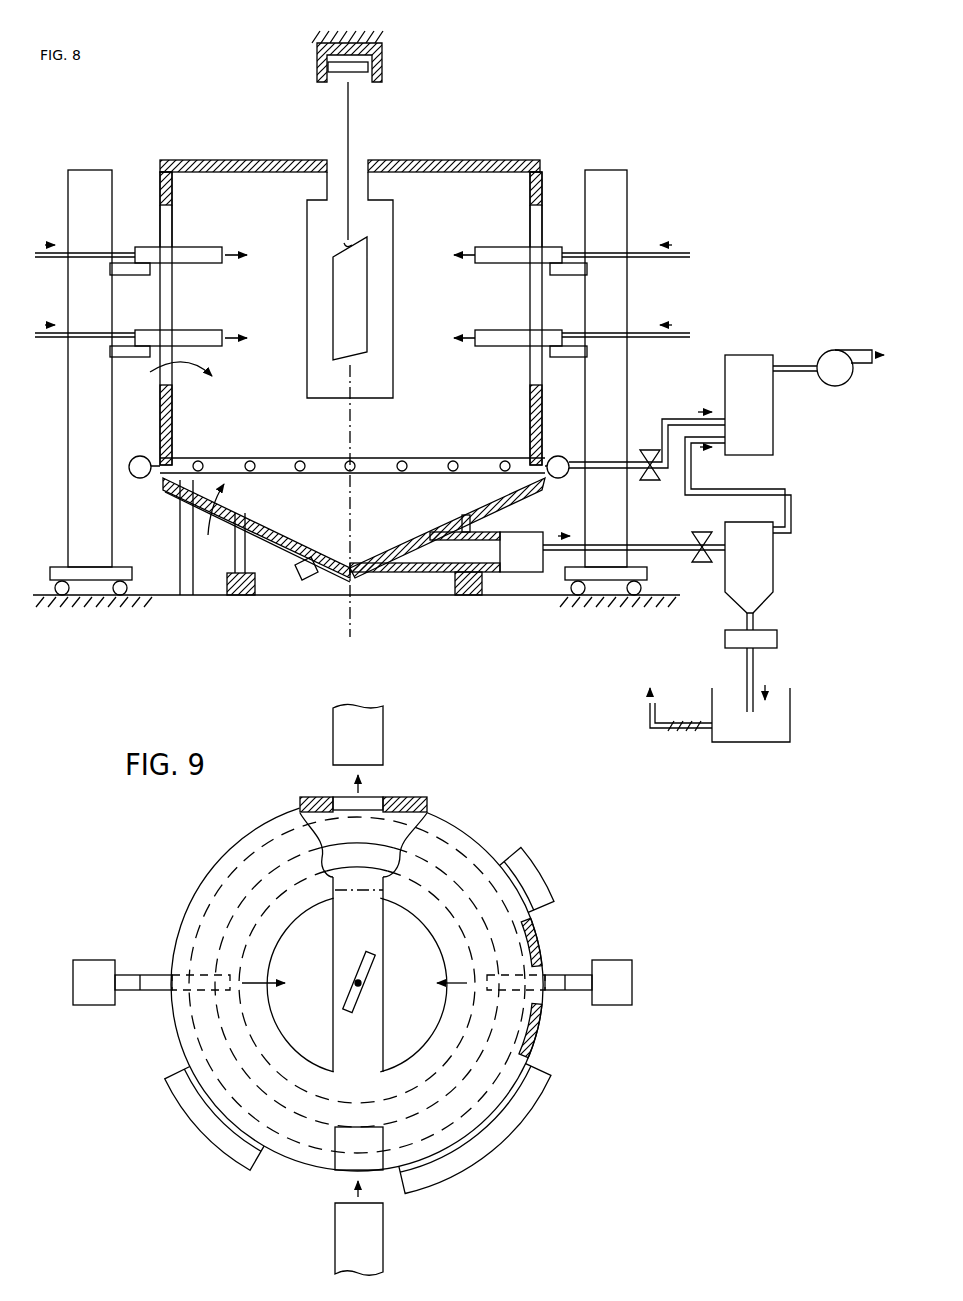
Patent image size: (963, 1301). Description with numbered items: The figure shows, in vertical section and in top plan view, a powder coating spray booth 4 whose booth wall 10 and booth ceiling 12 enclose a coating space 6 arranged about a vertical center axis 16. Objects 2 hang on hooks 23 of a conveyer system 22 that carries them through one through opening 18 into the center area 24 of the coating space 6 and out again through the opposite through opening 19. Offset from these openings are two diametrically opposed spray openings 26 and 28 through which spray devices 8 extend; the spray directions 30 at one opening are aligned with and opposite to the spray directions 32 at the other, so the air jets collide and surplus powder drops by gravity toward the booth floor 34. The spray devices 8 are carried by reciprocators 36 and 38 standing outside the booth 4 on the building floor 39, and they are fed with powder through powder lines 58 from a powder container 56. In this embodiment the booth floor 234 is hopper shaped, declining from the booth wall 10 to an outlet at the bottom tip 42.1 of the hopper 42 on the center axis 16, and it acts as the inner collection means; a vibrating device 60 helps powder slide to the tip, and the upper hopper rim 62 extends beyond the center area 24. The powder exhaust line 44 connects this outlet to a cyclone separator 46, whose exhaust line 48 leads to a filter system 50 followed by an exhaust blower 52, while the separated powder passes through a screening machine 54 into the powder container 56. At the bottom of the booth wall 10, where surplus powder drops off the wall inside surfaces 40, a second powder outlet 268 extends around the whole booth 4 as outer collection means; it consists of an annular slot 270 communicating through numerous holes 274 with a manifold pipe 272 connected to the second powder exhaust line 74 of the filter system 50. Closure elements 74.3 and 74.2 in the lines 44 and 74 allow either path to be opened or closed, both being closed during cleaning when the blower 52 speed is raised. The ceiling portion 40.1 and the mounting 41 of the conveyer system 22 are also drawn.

In FIG. 8, the objects 2 is at (357, 262).
In FIG. 9, the objects 2 is at (368, 965).
In FIG. 8, the spray booth 4 is at (466, 150).
In FIG. 9, the spray booth 4 is at (495, 843).
In FIG. 8, the coating space 6 is at (481, 195).
In FIG. 9, the coating space 6 is at (280, 850).
In FIG. 8, the spray devices 8 is at (195, 248).
In FIG. 9, the spray devices 8 is at (150, 992).
In FIG. 8, the booth wall 10 is at (160, 190).
In FIG. 9, the booth wall 10 is at (400, 808).
In FIG. 8, the booth ceiling 12 is at (412, 160).
In FIG. 8, the center axis 16 is at (355, 602).
In FIG. 9, the center axis 16 is at (355, 985).
In FIG. 9, the through opening 18 is at (350, 1165).
In FIG. 8, the through opening 19 is at (322, 220).
In FIG. 9, the through opening 19 is at (347, 797).
In FIG. 8, the conveyer system 22 is at (318, 62).
In FIG. 9, the conveyer system 22 is at (333, 725).
In FIG. 8, the hooks 23 is at (346, 106).
In FIG. 8, the center area 24 is at (290, 315).
In FIG. 9, the center area 24 is at (268, 885).
In FIG. 8, the spray opening 26 is at (540, 218).
In FIG. 9, the spray opening 26 is at (543, 967).
In FIG. 8, the spray opening 28 is at (160, 222).
In FIG. 9, the spray opening 28 is at (170, 970).
In FIG. 8, the spray directions 30 is at (455, 262).
In FIG. 8, the spray directions 32 is at (245, 250).
In FIG. 8, the booth floor 34 is at (165, 368).
In FIG. 8, the reciprocator 36 is at (625, 192).
In FIG. 8, the reciprocator 38 is at (80, 208).
In FIG. 9, the reciprocator 38 is at (100, 1005).
In FIG. 8, the building floor 39 is at (158, 597).
In FIG. 8, the wall inside surfaces 40 is at (176, 185).
In FIG. 8, the cover portion 40.1 is at (223, 162).
In FIG. 8, the ceiling mount 41 is at (385, 37).
In FIG. 9, the hopper 42 is at (395, 797).
In FIG. 8, the bottom tip 42.1 is at (350, 572).
In FIG. 8, the powder exhaust line 44 is at (522, 565).
In FIG. 8, the cyclone separator 46 is at (773, 570).
In FIG. 8, the exhaust line 48 is at (790, 500).
In FIG. 8, the filter system 50 is at (773, 428).
In FIG. 8, the exhaust blower 52 is at (838, 352).
In FIG. 8, the screening machine 54 is at (778, 640).
In FIG. 8, the powder container 56 is at (790, 716).
In FIG. 8, the powder lines 58 is at (45, 258).
In FIG. 8, the vibrating device 60 is at (300, 580).
In FIG. 9, the hopper rim 62 is at (400, 850).
In FIG. 8, the second powder exhaust line 74 is at (690, 420).
In FIG. 8, the closure element 74.2 is at (650, 482).
In FIG. 8, the closure element 74.3 is at (702, 565).
In FIG. 8, the booth floor 234 is at (305, 548).
In FIG. 8, the second powder outlet 268 is at (217, 537).
In FIG. 8, the annular slot 270 is at (183, 458).
In FIG. 8, the bearing balls / pads 272 is at (140, 480).
In FIG. 9, the bearing balls / pads 272 is at (535, 878).
In FIG. 8, the holes 274 is at (505, 460).